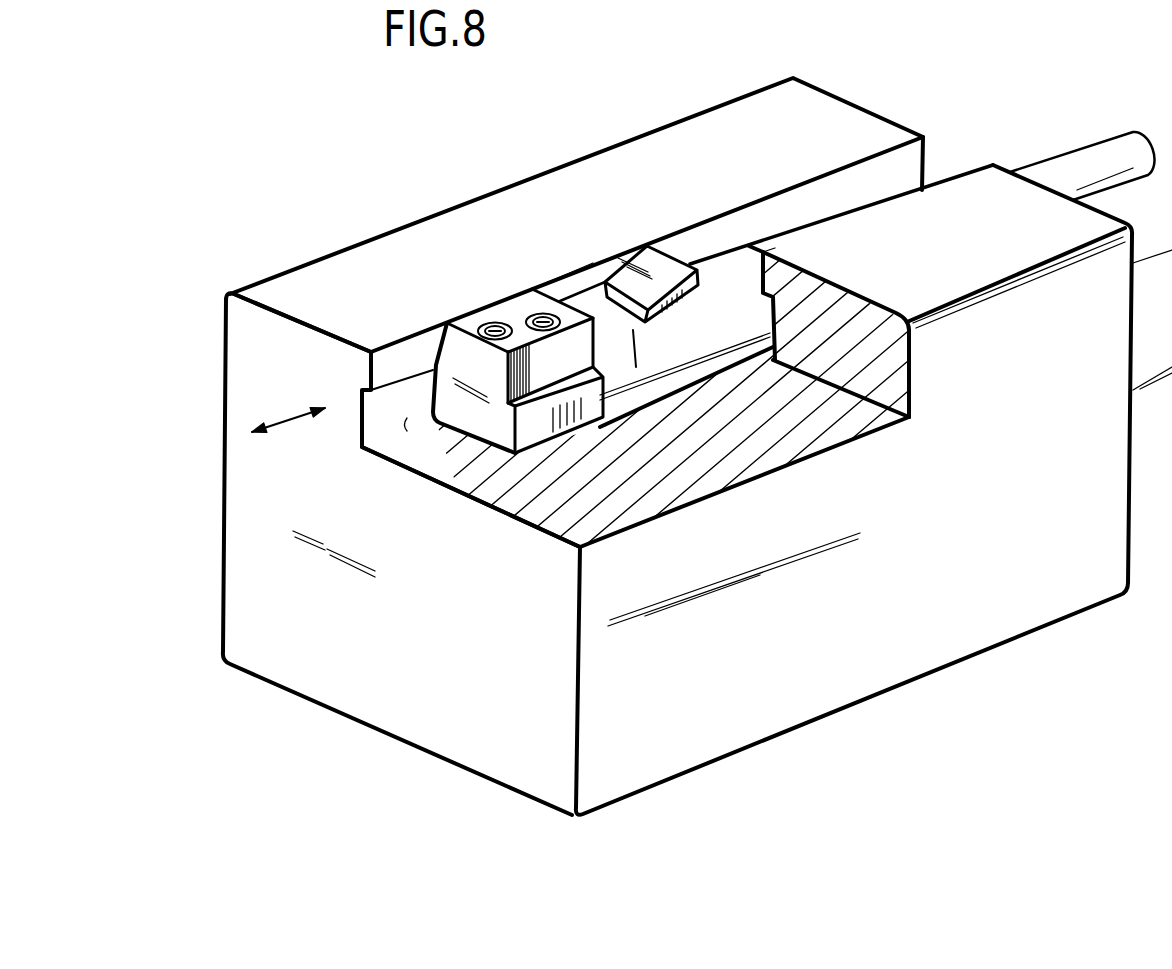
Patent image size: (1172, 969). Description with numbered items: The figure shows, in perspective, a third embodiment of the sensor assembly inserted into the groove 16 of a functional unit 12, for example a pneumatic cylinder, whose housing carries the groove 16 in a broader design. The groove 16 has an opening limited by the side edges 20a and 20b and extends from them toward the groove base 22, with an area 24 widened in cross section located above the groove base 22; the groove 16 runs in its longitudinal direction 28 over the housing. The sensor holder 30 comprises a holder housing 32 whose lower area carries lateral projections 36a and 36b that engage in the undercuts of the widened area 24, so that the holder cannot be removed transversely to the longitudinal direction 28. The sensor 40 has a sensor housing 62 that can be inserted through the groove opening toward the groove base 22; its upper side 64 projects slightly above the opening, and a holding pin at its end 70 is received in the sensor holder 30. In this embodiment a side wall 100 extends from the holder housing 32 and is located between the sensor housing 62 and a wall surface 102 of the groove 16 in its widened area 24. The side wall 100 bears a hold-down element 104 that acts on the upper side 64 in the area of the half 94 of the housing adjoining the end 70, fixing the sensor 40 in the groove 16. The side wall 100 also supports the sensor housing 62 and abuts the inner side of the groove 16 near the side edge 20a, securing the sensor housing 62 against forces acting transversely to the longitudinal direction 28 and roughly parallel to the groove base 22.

The functional unit 12 is at (1040, 595).
The groove 16 is at (893, 172).
The side edge 20a is at (755, 250).
The side edge 20b is at (342, 292).
The groove base 22 is at (433, 458).
The widened area 24 is at (378, 412).
The longitudinal direction 28 is at (284, 423).
The sensor holder 30 is at (457, 250).
The holder housing 32 is at (476, 420).
The lateral projection 36a is at (530, 388).
The lateral projection 36b is at (433, 368).
The sensor 40 is at (716, 262).
The sensor housing 62 is at (740, 330).
The upper side 64 is at (737, 260).
The end 70 is at (615, 380).
The half of the housing 94 is at (702, 340).
The side wall 100 is at (585, 288).
The wall surface 102 is at (432, 422).
The hold-down element 104 is at (633, 280).